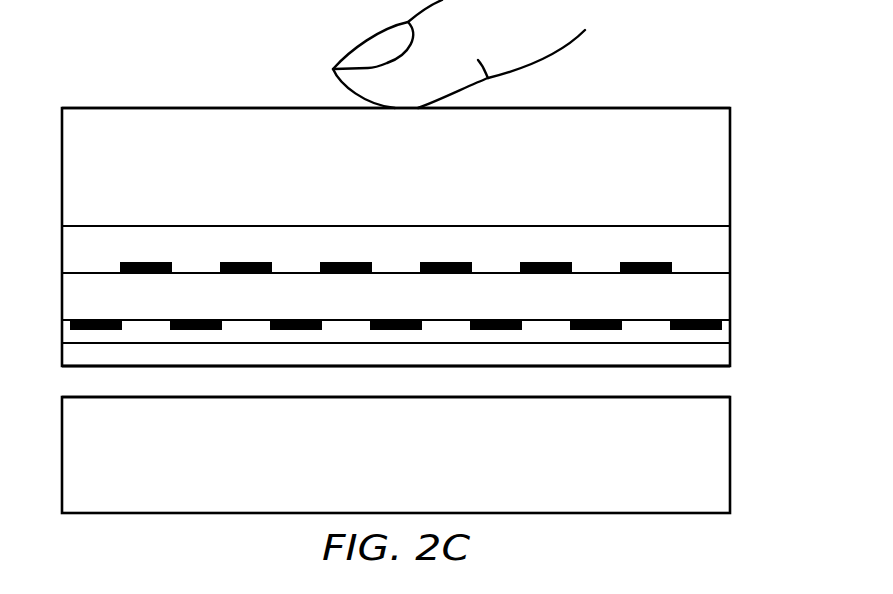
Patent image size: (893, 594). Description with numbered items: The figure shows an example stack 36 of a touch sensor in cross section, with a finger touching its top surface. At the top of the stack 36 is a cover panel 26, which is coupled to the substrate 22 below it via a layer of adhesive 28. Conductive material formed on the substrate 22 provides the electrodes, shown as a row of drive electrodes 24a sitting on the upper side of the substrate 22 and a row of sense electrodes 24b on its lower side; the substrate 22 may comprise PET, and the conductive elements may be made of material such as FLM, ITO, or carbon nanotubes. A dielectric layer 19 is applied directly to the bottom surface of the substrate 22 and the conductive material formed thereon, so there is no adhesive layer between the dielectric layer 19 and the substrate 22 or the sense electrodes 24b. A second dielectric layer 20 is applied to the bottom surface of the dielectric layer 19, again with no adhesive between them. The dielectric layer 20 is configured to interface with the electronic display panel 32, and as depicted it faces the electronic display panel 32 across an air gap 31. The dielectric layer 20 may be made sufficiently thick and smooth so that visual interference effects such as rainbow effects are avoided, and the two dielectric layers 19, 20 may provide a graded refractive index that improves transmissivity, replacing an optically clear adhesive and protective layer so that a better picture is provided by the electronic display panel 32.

The stack 36 is at (49, 108).
The cover panel 26 is at (720, 168).
The layer of adhesive 28 is at (720, 251).
The drive electrodes 24a is at (645, 262).
The substrate 22 is at (720, 298).
The dielectric layer 19 is at (719, 337).
The sense electrodes 24b is at (595, 330).
The dielectric layer 20 is at (720, 356).
The air gap 31 is at (720, 382).
The electronic display panel 32 is at (719, 450).